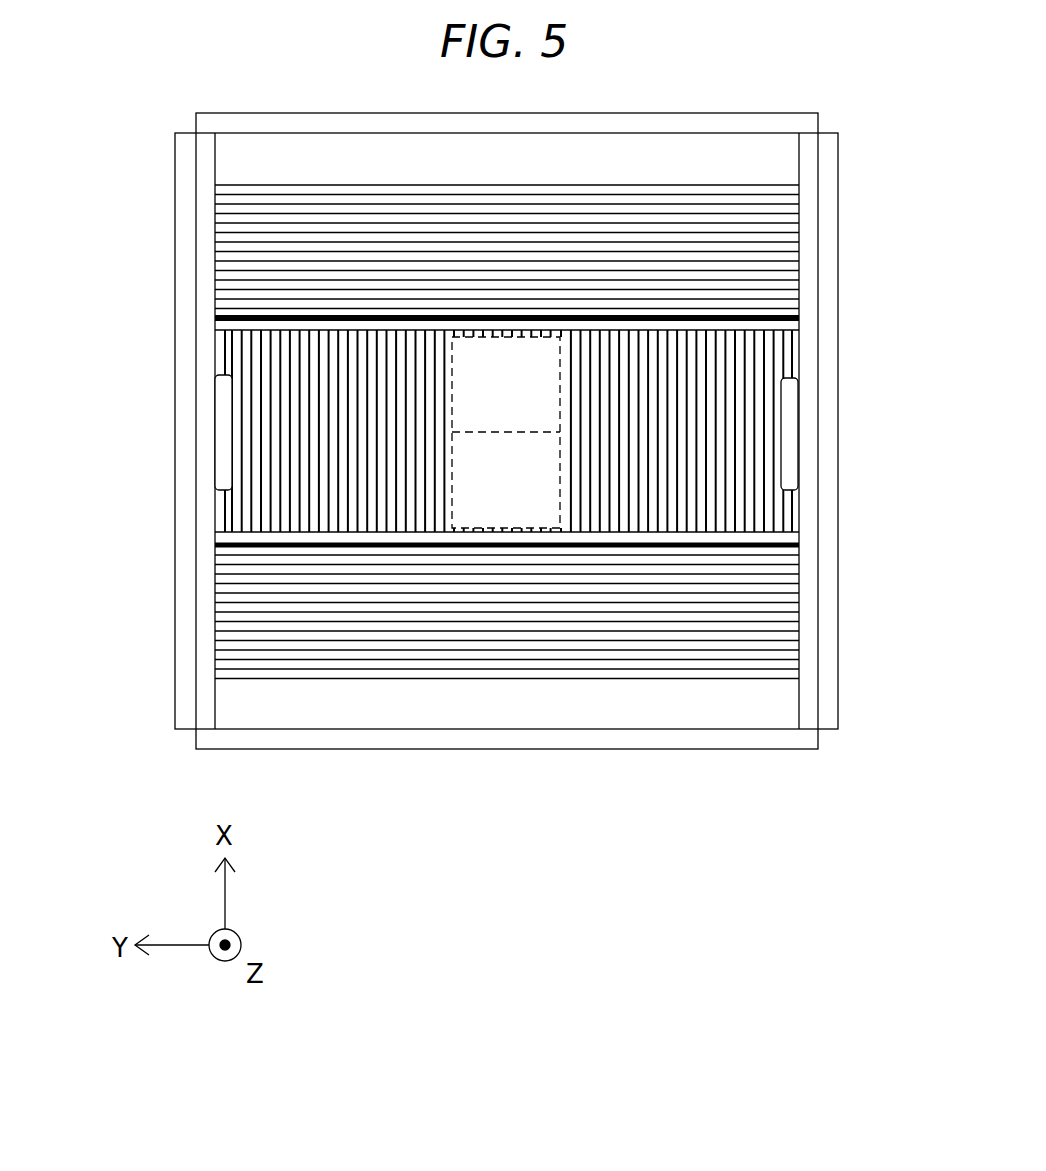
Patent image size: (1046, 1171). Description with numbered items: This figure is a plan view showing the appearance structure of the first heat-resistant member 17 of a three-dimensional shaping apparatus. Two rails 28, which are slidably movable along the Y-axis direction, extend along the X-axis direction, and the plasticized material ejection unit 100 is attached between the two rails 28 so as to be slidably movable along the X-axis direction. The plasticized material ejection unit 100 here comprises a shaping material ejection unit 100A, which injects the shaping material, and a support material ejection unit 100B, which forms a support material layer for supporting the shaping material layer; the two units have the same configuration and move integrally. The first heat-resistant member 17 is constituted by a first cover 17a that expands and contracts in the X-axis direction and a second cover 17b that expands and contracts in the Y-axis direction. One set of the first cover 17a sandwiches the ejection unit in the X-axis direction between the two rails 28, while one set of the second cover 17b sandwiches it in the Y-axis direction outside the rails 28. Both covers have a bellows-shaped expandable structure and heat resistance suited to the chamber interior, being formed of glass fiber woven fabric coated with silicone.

The first heat-resistant member 17 is at (507, 534).
The first cover 17a is at (347, 487).
The second cover 17b is at (687, 598).
The rails 28 is at (220, 327).
The plasticized material ejection unit 100 is at (690, 432).
The shaping material ejection unit 100A is at (556, 474).
The support material ejection unit 100B is at (556, 401).